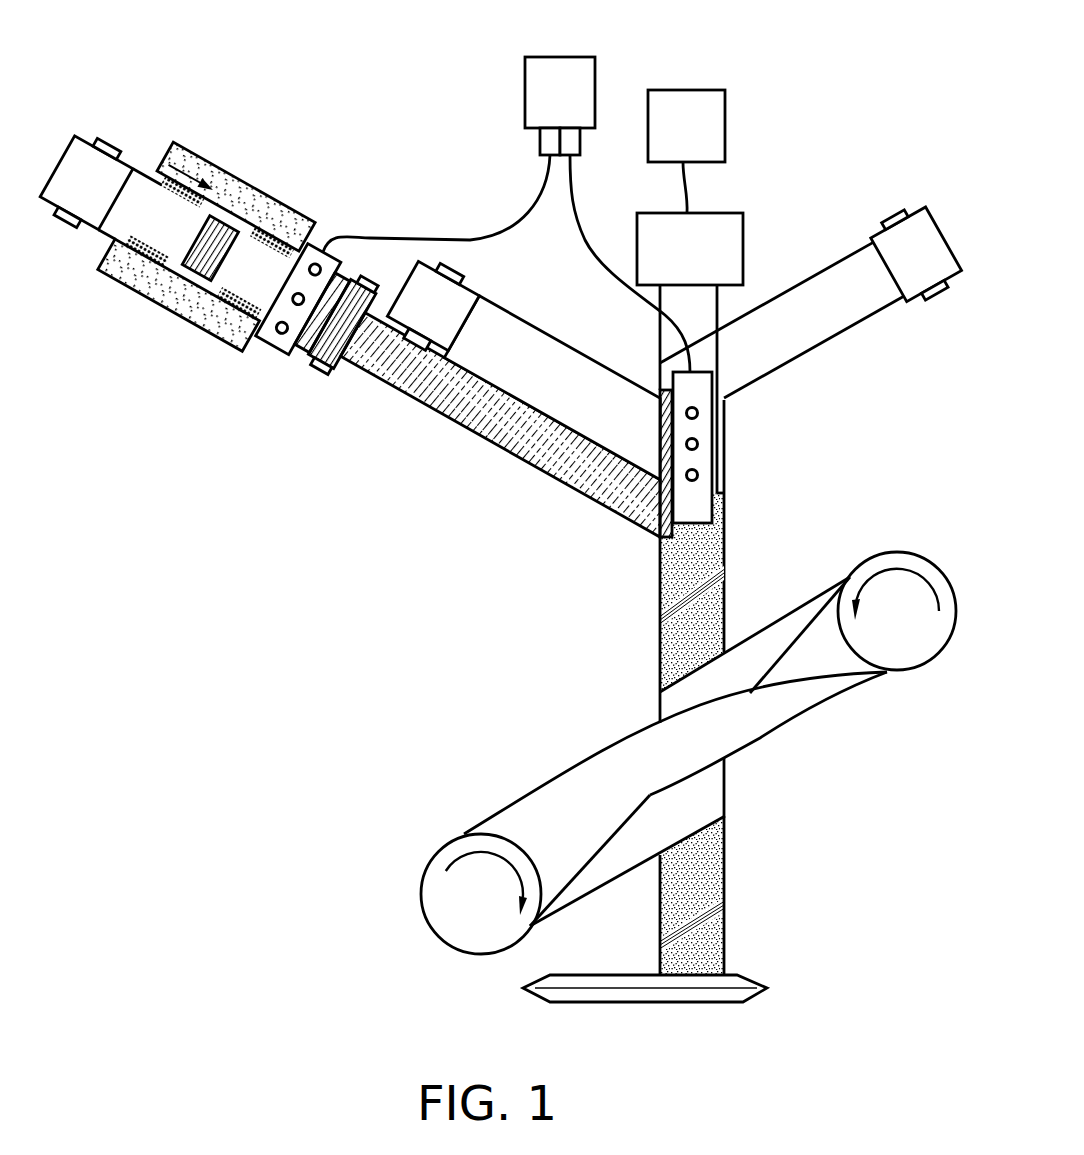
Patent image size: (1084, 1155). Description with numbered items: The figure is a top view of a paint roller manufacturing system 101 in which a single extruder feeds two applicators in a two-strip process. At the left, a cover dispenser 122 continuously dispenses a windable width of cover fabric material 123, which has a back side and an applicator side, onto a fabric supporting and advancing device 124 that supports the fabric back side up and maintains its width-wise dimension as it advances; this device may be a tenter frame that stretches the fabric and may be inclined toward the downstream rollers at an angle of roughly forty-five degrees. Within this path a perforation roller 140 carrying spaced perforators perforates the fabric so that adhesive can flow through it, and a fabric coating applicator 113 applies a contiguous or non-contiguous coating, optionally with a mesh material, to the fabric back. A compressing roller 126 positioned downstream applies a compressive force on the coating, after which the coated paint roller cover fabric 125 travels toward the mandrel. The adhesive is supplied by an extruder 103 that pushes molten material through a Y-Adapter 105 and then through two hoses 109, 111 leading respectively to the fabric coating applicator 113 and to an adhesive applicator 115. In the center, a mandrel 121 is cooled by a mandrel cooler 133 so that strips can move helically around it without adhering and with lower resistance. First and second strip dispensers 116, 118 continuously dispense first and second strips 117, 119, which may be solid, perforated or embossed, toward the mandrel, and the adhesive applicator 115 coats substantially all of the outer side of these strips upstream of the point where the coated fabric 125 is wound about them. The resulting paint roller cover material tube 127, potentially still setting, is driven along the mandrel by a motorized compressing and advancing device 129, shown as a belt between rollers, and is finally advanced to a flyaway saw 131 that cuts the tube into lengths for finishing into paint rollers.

The paint roller manufacturing system 101 is at (310, 25).
The extruder 103 is at (525, 67).
The Y-Adapter 105 is at (540, 140).
The hose 109 is at (531, 209).
The hose 111 is at (574, 215).
The fabric coating applicator 113 is at (274, 346).
The adhesive applicator 115 is at (716, 448).
The first strip dispenser 116 is at (926, 302).
The first strip 117 is at (850, 326).
The second strip dispenser 118 is at (412, 279).
The second strip 119 is at (574, 348).
The mandrel 121 is at (743, 246).
The cover dispenser 122 is at (116, 145).
The cover fabric material 123 is at (118, 237).
The fabric supporting and advancing device 124 is at (140, 319).
The coated paint roller cover fabric 125 is at (437, 412).
The compressing roller 126 is at (330, 367).
The paint roller cover material tube 127 is at (658, 923).
The motorized compressing and advancing device 129 is at (541, 781).
The flyaway saw 131 is at (733, 1003).
The mandrel cooler 133 is at (690, 89).
The perforation roller 140 is at (198, 285).